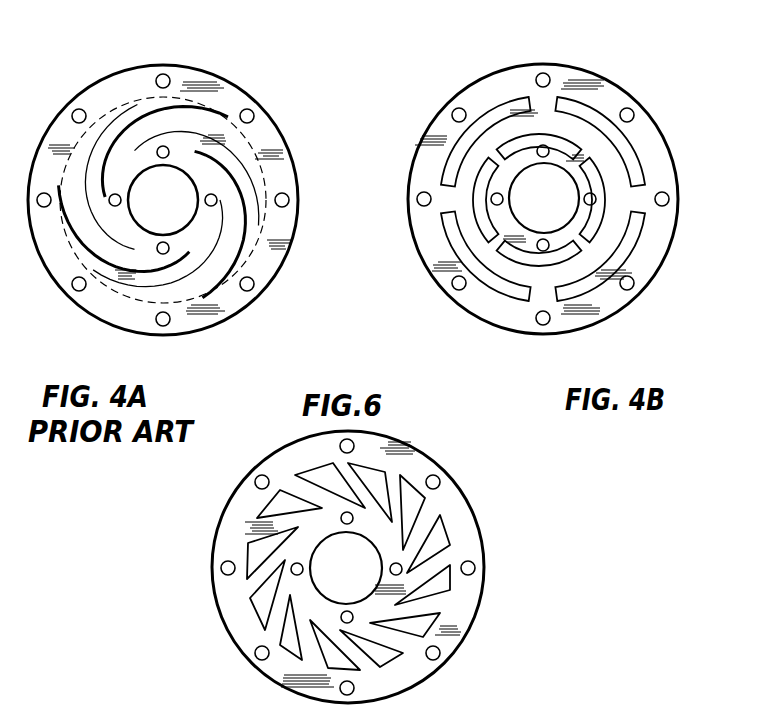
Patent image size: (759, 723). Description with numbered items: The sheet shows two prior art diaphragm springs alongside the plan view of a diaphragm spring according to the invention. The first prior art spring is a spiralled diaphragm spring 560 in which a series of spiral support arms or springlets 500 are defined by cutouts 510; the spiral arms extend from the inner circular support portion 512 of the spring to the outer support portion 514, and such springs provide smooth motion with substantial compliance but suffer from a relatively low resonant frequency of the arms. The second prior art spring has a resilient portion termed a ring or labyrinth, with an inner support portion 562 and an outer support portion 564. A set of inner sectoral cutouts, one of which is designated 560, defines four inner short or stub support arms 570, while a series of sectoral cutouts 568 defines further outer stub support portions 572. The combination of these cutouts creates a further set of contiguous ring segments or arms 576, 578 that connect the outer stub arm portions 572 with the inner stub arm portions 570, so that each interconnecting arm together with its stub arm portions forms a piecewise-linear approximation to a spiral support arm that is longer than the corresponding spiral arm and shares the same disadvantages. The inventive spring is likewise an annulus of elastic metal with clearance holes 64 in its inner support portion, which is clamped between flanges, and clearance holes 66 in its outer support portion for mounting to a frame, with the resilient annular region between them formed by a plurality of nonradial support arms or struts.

In FIG. 4A, the spiral support arms 500 is at (210, 138).
In FIG. 4A, the cutouts 510 is at (145, 125).
In FIG. 4A, the inner circular support portion 512 is at (197, 180).
In FIG. 4A, the outer support portion 514 is at (273, 138).
In FIG. 4A, the clearance holes 64 is at (110, 202).
In FIG. 4A, the clearance holes 66 is at (252, 110).
In FIG. 4A, the diaphragm spring 560 is at (238, 303).
In FIG. 4B, the diaphragm spring 560 is at (592, 247).
In FIG. 4B, the inner support portion 562 is at (585, 183).
In FIG. 4B, the outer support portion 564 is at (652, 148).
In FIG. 4B, the sectoral cutouts 568 is at (497, 112).
In FIG. 4B, the inner stub support arms 570 is at (443, 140).
In FIG. 4B, the outer stub support portions 572 is at (547, 97).
In FIG. 4B, the ring segment arm 576 is at (580, 125).
In FIG. 4B, the ring segment arm 578 is at (632, 173).